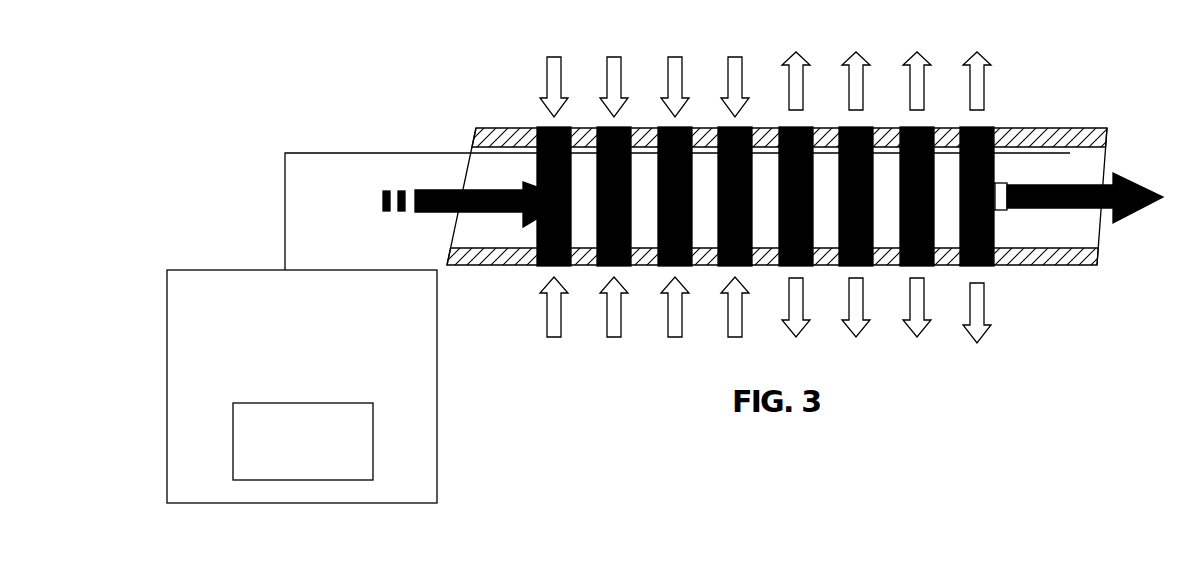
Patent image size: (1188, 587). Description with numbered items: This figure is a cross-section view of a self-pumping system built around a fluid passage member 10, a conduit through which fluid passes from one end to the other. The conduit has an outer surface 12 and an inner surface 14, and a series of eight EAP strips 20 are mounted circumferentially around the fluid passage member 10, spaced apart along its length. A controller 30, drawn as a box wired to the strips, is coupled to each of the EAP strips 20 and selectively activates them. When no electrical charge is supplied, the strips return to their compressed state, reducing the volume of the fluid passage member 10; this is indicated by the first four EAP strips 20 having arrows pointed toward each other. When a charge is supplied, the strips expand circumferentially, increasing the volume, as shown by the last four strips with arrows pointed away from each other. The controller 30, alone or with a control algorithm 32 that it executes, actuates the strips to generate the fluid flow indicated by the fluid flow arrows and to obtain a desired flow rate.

The fluid passage member 10 is at (485, 133).
The outer surface 12 is at (1080, 130).
The inner surface 14 is at (1077, 243).
The EAP strips 20 is at (983, 128).
The controller 30 is at (618, 328).
The control algorithm 32 is at (303, 441).